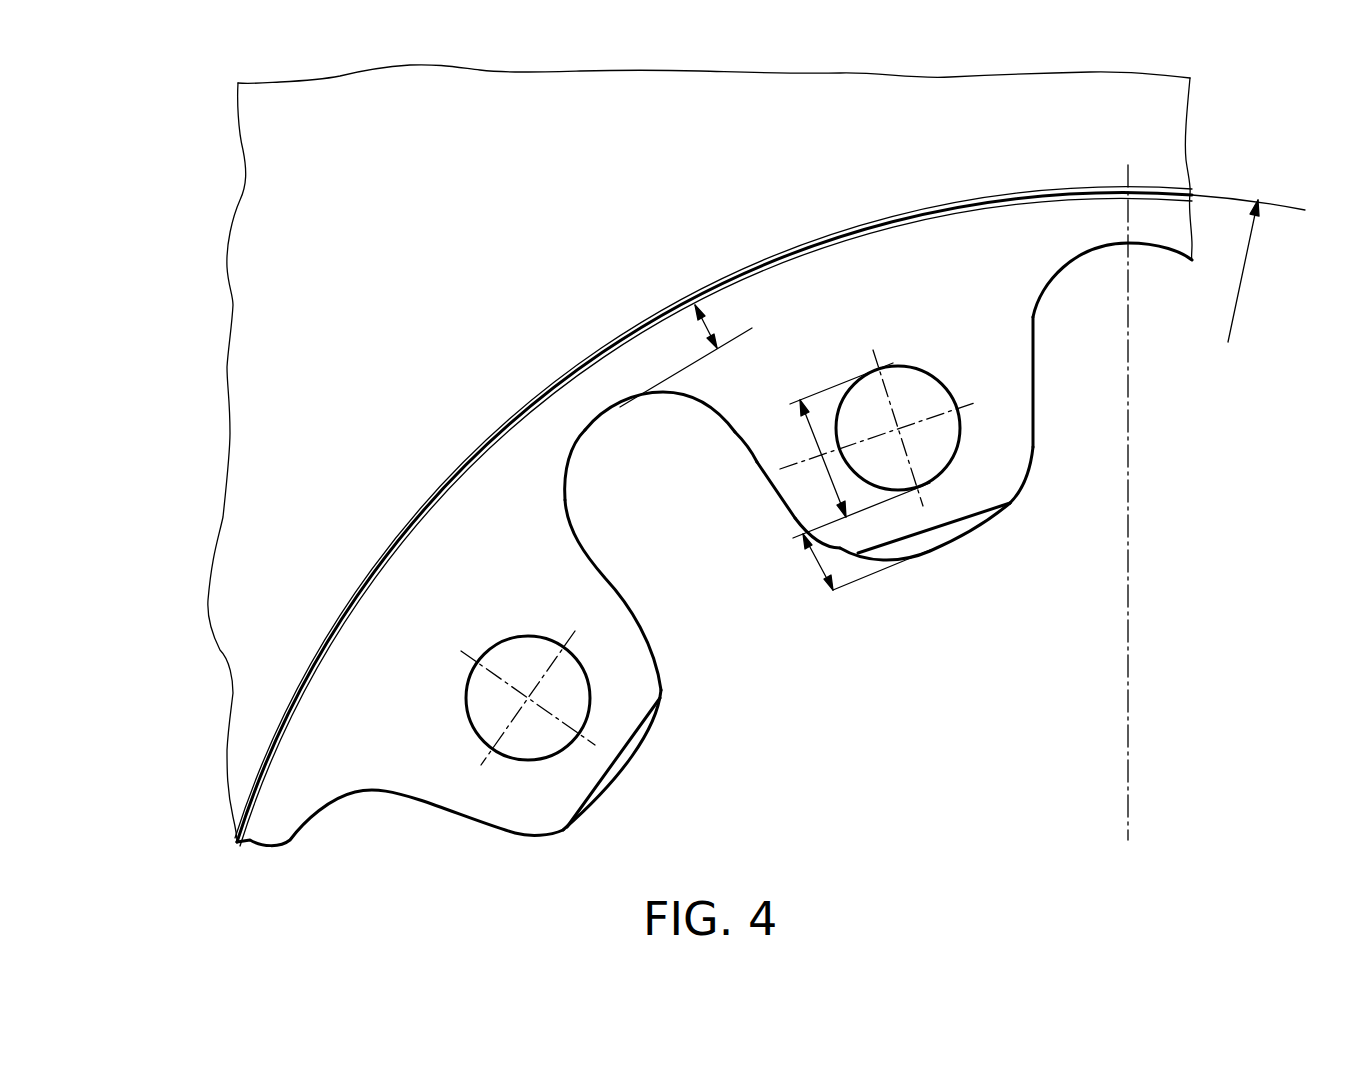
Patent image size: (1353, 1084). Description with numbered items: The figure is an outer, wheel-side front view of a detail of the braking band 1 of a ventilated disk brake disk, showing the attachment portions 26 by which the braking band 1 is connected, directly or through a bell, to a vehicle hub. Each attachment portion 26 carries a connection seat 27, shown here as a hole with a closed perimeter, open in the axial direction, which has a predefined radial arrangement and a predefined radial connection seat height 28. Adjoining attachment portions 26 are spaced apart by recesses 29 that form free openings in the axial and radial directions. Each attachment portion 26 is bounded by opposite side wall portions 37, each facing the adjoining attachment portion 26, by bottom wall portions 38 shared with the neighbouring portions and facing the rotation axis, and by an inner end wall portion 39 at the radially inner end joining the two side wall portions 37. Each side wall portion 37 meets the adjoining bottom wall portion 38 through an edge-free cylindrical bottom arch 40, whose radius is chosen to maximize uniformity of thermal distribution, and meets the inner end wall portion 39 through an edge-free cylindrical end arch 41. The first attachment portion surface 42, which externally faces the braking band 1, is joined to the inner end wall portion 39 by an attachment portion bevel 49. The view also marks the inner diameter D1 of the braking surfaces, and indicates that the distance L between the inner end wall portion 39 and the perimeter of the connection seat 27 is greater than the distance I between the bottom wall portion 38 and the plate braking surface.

The braking band 1 is at (316, 335).
The attachment portion 26 is at (633, 652).
The connection seat 27 is at (890, 368).
The radial connection seat height 28 is at (803, 439).
The recess 29 is at (659, 496).
The side wall portion 37 is at (753, 463).
The bottom wall portion 38 is at (583, 423).
The inner end wall portion 39 is at (943, 547).
The cylindrical bottom arch 40 is at (687, 397).
The cylindrical end arch 41 is at (838, 548).
The first attachment portion surface 42 is at (1139, 323).
The attachment portion bevel 49 is at (973, 523).
The distance L is at (817, 560).
The distance I is at (705, 323).
The inner diameter D1 is at (1245, 267).